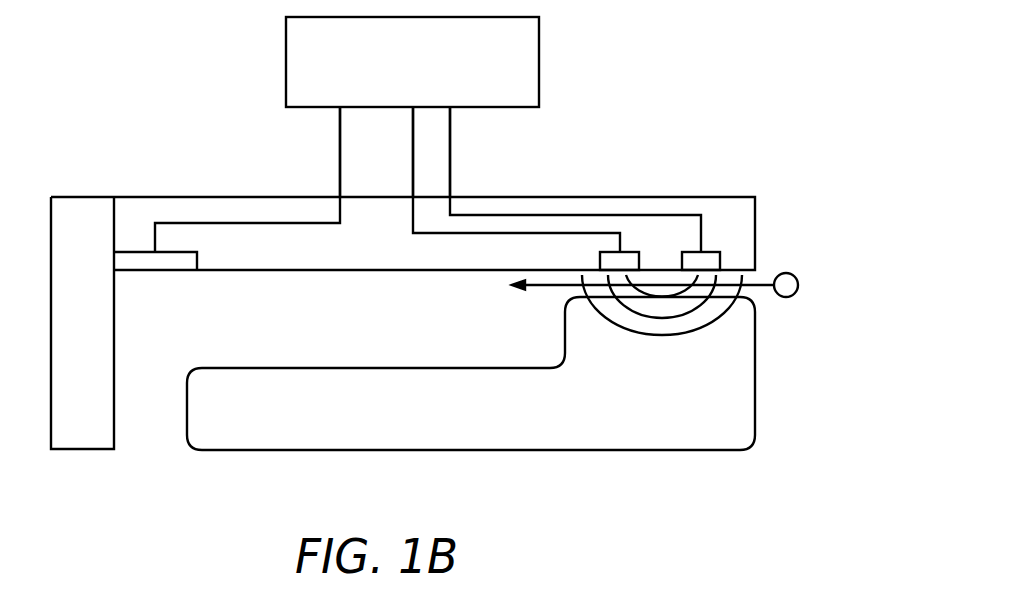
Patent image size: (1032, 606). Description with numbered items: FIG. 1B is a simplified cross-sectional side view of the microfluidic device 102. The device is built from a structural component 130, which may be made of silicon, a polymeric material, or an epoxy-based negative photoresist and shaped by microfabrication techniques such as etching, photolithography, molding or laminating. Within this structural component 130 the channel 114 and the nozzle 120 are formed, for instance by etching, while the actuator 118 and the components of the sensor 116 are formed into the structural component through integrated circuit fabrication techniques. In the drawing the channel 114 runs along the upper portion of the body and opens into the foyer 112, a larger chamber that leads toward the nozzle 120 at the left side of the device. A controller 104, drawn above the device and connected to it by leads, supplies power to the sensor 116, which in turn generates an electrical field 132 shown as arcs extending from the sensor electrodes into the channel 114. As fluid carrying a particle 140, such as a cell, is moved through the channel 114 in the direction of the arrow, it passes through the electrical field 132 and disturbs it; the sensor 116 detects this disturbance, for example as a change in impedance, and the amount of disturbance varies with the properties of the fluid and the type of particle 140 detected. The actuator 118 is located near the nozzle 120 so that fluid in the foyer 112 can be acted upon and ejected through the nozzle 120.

The microfluidic device 102 is at (182, 103).
The controller 104 is at (434, 87).
The foyer 112 is at (414, 356).
The channel 114 is at (763, 303).
The sensor 116 is at (668, 231).
The actuator 118 is at (135, 252).
The nozzle 120 is at (153, 430).
The structural component 130 is at (578, 158).
The electrical field 132 is at (661, 349).
The particle 140 is at (798, 278).